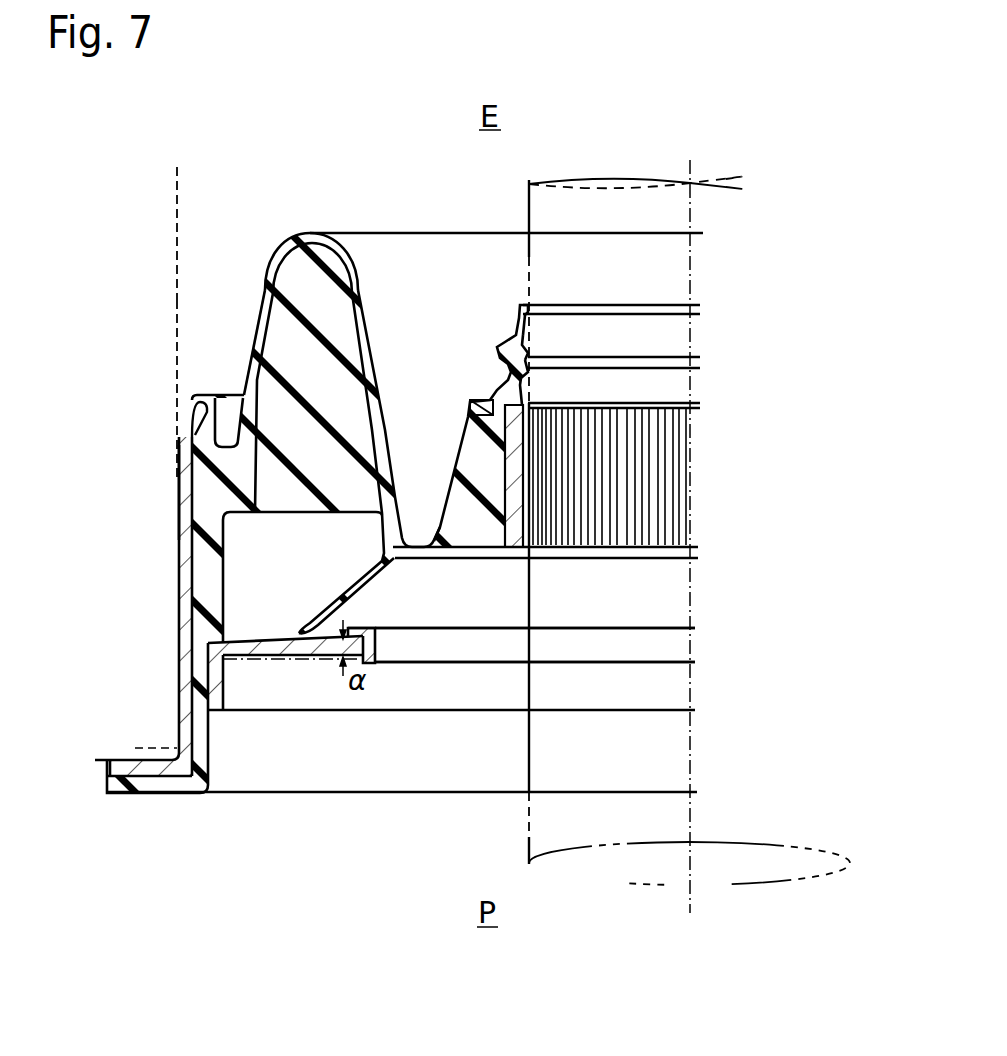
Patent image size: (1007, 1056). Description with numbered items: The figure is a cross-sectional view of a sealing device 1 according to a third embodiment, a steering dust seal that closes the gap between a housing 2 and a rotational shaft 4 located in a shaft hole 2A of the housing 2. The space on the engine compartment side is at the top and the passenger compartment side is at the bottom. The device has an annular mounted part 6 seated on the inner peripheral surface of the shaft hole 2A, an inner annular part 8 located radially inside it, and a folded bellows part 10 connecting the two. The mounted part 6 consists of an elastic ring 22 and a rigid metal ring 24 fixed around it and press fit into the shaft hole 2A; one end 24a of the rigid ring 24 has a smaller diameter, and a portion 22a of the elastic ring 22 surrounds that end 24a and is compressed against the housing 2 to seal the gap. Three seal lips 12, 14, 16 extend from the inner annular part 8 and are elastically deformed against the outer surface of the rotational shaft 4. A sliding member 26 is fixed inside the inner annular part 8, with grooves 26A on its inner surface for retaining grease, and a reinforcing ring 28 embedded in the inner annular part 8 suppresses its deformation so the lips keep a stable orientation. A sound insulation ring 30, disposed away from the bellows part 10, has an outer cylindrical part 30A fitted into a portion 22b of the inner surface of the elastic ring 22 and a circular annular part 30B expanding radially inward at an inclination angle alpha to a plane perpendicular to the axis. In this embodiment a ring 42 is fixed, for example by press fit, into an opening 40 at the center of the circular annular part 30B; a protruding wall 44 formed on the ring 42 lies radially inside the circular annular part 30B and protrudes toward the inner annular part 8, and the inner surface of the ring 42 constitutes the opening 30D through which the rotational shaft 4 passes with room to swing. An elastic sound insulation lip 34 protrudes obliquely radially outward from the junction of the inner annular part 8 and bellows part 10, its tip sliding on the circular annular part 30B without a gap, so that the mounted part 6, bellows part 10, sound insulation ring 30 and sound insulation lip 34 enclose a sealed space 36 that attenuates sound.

The sealing device 1 is at (426, 219).
The housing 2 is at (168, 212).
The shaft hole 2A is at (180, 272).
The rotational shaft 4 is at (528, 215).
The mounted part 6 is at (180, 493).
The inner annular part 8 is at (470, 437).
The bellows part 10 is at (264, 298).
The seal lip 12 is at (520, 308).
The seal lip 14 is at (535, 350).
The seal lip 16 is at (530, 372).
The elastic ring 22 is at (247, 477).
The portion of the elastic ring 22a is at (207, 398).
The portion of the inner peripheral surface of the elastic ring 22b is at (222, 652).
The rigid ring 24 is at (178, 623).
The end of the rigid ring 24a is at (197, 430).
The sliding member 26 is at (497, 549).
The grooves 26A is at (650, 550).
The reinforcing ring 28 is at (477, 400).
The sound insulation ring 30 is at (218, 712).
The outer cylindrical part 30A is at (218, 677).
The circular annular part 30B is at (323, 657).
The opening 30D is at (382, 664).
The sound insulation lip 34 is at (357, 585).
The sealed space 36 is at (317, 275).
The opening 40 is at (377, 633).
The ring 42 is at (412, 662).
The protruding wall 44 is at (350, 628).